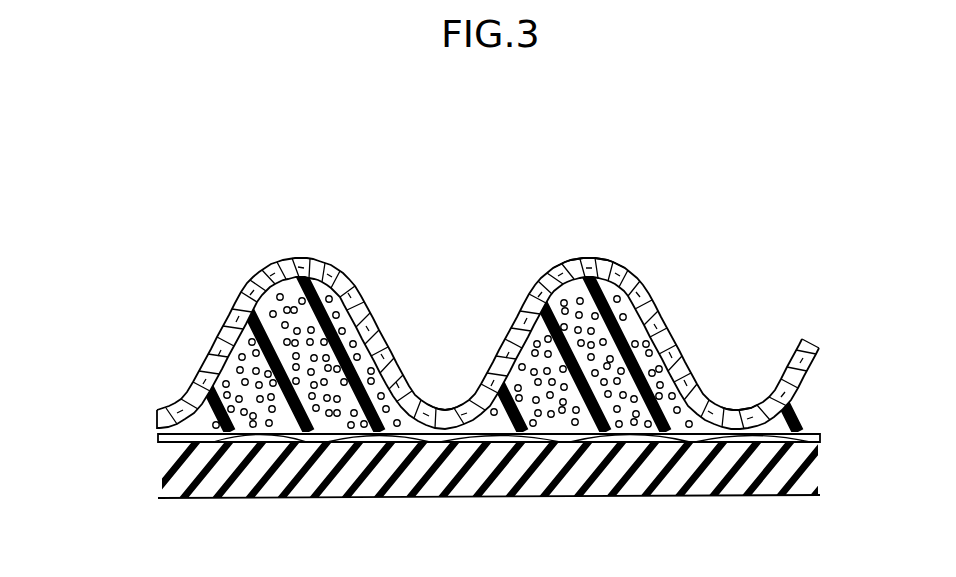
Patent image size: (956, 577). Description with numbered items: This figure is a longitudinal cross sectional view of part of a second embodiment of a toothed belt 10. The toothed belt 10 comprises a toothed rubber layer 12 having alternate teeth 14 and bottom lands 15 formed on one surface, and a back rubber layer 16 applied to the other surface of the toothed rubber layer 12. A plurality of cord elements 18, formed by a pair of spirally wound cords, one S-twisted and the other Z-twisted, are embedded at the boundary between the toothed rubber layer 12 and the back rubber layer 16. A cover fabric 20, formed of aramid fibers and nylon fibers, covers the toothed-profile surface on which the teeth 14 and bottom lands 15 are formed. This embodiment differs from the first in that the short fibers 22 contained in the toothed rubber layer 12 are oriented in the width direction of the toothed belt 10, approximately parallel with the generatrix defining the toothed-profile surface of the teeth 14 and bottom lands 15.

The toothed belt 10 is at (211, 289).
The toothed rubber layer 12 is at (226, 376).
The teeth 14 is at (618, 264).
The bottom lands 15 is at (452, 396).
The back rubber layer 16 is at (587, 464).
The cord elements 18 is at (172, 440).
The cover fabric 20 is at (668, 330).
The short fibers 22 is at (328, 300).